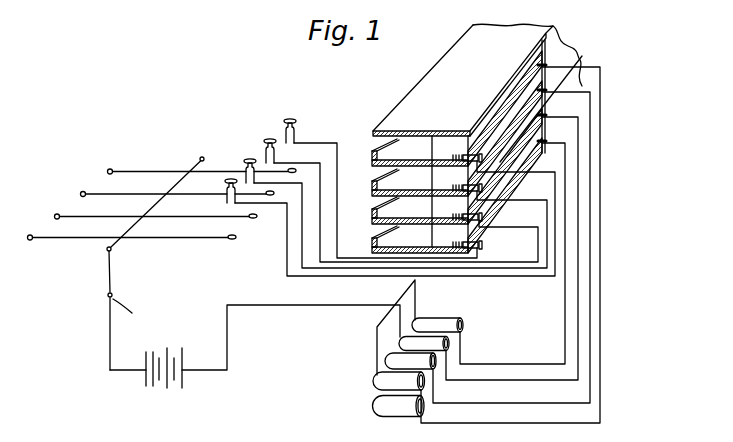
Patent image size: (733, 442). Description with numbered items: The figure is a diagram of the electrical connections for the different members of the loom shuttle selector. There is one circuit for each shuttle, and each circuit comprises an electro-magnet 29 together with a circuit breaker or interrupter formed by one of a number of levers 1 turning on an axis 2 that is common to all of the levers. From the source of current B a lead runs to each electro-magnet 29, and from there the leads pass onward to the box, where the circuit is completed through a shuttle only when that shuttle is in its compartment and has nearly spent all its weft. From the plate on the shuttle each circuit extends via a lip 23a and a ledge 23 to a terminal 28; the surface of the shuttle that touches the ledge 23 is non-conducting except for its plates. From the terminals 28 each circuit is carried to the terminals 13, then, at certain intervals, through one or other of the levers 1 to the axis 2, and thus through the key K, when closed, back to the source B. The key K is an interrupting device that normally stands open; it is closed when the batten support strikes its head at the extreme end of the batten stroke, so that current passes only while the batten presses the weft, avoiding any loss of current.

The levers 1 is at (82, 240).
The axis 2 is at (114, 249).
The terminals 13 is at (226, 202).
The ledge 23 is at (460, 138).
The lip 23a is at (377, 204).
The terminal 28 is at (484, 246).
The electro-magnet 29 is at (418, 348).
The key K is at (130, 310).
The source of current B is at (150, 393).